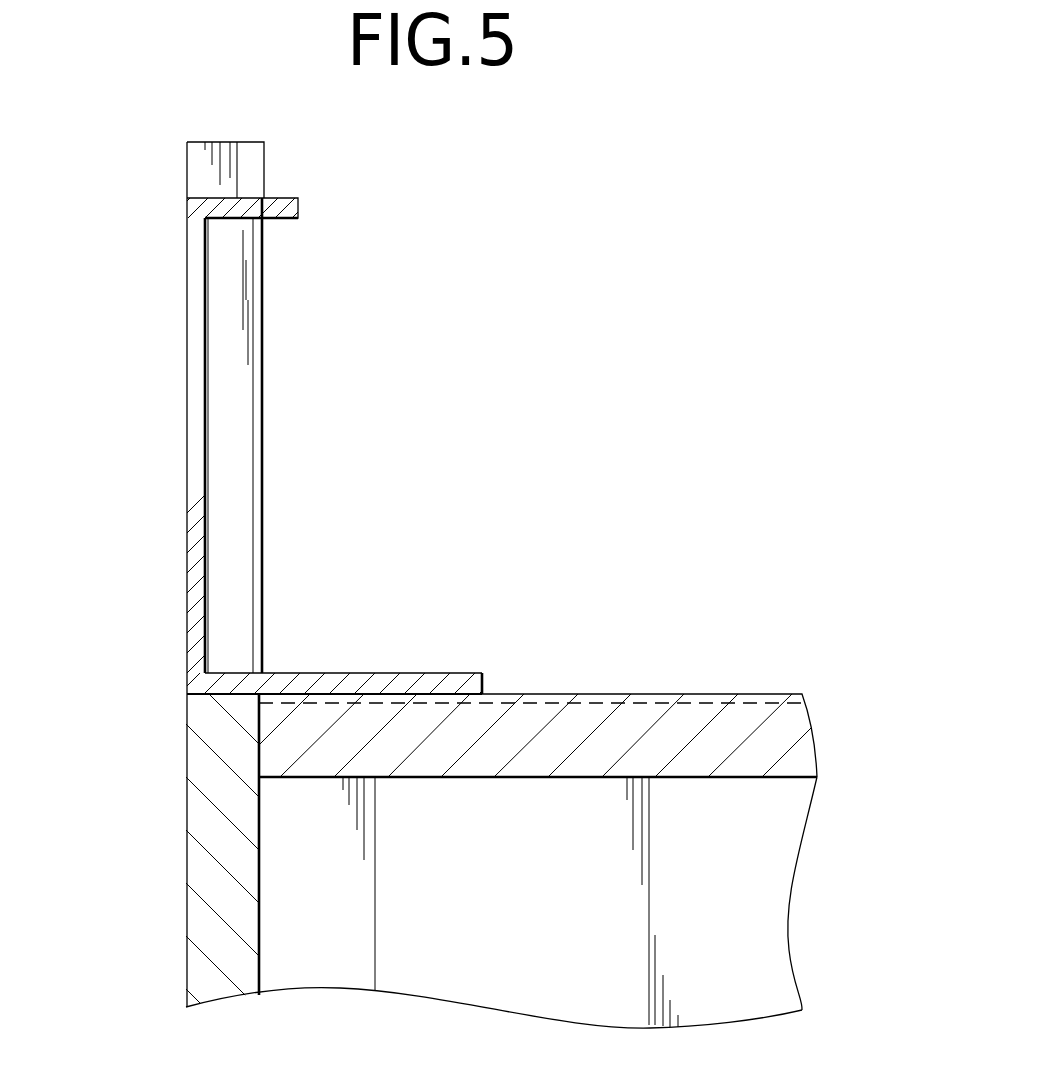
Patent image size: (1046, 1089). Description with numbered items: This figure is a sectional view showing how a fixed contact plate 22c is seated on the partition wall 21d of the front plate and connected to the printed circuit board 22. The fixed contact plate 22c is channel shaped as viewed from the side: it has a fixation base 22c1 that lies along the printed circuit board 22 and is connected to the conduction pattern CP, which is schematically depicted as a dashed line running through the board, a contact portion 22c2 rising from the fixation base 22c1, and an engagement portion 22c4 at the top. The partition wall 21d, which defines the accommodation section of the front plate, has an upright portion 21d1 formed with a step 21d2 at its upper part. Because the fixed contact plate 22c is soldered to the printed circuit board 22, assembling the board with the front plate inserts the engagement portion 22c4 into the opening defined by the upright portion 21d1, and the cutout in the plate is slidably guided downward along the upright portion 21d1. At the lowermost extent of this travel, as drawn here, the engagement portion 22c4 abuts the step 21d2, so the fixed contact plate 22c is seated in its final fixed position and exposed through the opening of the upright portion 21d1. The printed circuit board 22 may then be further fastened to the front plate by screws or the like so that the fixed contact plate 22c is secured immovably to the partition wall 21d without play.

The fixed contact plate 22c is at (172, 530).
The fixation base 22c1 is at (403, 673).
The contact portion 22c2 is at (187, 313).
The engagement portion 22c4 is at (275, 210).
The partition wall 21d is at (220, 790).
The upright portion 21d1 is at (233, 358).
The step 21d2 is at (242, 222).
The printed circuit board 22 is at (637, 712).
The conduction pattern CP is at (752, 706).